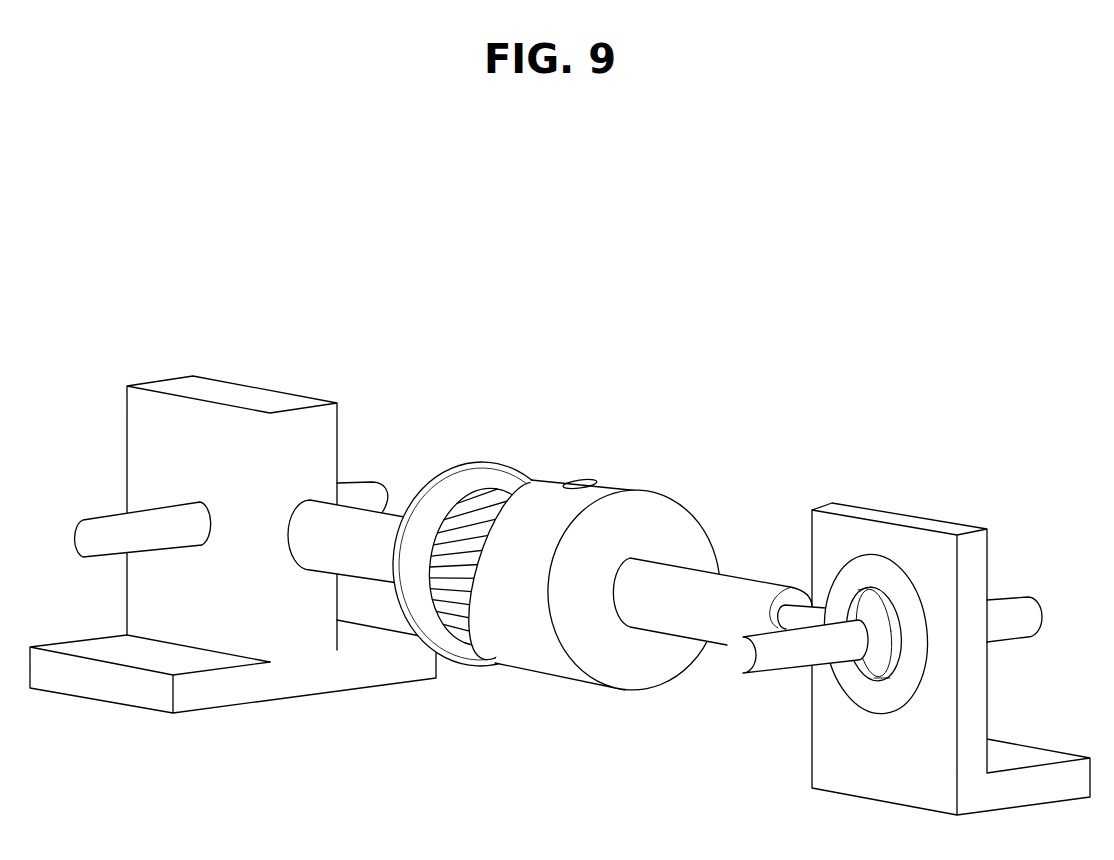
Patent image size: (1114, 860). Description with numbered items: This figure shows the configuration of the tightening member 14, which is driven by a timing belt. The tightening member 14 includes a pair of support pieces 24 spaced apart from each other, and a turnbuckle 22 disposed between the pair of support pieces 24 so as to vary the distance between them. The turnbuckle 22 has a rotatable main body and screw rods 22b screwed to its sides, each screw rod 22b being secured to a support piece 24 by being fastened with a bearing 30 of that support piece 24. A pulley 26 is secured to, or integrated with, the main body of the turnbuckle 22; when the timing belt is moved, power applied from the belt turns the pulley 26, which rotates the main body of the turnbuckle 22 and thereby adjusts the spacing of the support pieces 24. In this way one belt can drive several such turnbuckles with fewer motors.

The tightening member 14 is at (382, 196).
The turnbuckle 22 is at (369, 535).
The screw rod 22b is at (892, 590).
The support piece 24 is at (233, 397).
The pulley 26 is at (645, 527).
The bearing 30 is at (765, 653).